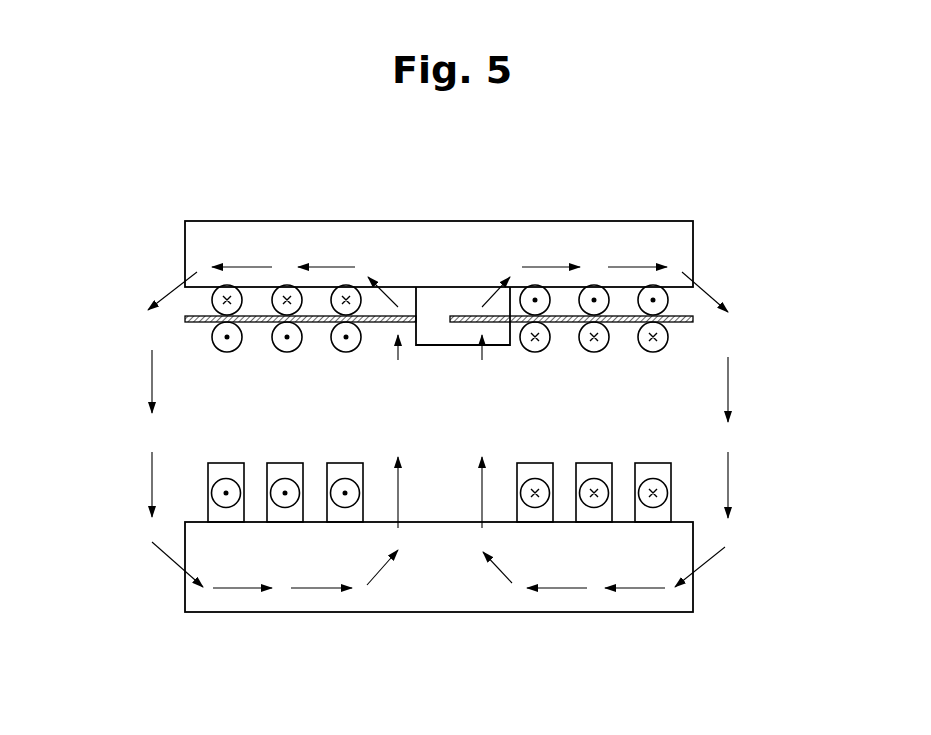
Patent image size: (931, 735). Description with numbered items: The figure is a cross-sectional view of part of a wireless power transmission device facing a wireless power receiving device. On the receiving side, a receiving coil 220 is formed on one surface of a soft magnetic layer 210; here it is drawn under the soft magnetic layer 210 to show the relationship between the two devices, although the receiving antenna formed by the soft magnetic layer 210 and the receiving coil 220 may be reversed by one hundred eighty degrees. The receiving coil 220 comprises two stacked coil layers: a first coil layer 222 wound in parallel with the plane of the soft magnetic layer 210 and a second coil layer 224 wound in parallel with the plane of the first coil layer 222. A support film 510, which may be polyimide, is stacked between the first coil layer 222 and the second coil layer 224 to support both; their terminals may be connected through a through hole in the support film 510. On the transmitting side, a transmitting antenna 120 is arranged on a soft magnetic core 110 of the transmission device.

The soft magnetic core 110 is at (447, 605).
The transmitting antenna 120 is at (670, 482).
The soft magnetic layer 210 is at (395, 224).
The receiving coil 220 is at (505, 276).
The first coil layer 222 is at (637, 291).
The second coil layer 224 is at (668, 338).
The support film 510 is at (185, 317).